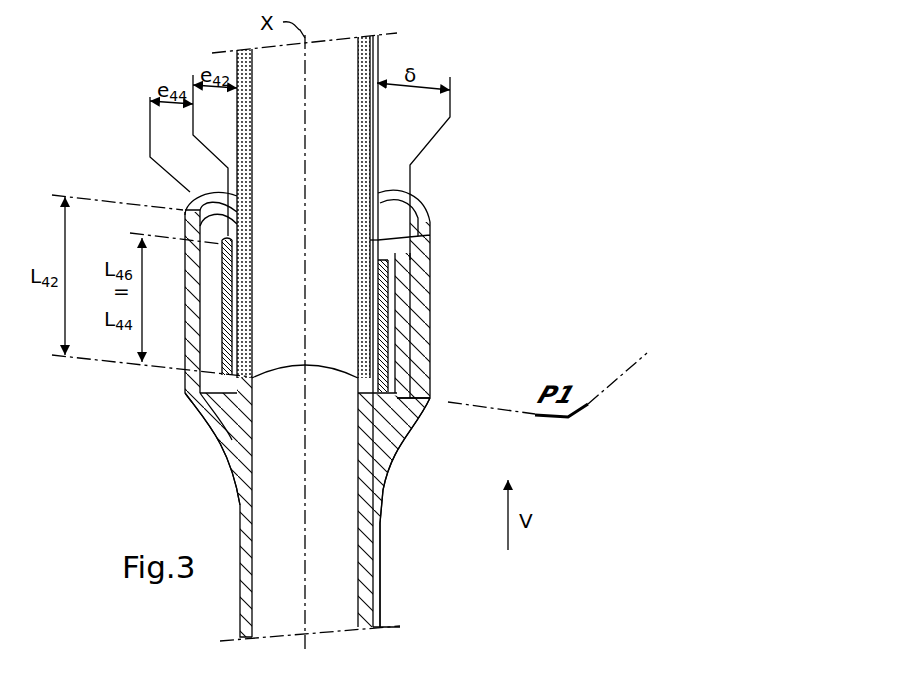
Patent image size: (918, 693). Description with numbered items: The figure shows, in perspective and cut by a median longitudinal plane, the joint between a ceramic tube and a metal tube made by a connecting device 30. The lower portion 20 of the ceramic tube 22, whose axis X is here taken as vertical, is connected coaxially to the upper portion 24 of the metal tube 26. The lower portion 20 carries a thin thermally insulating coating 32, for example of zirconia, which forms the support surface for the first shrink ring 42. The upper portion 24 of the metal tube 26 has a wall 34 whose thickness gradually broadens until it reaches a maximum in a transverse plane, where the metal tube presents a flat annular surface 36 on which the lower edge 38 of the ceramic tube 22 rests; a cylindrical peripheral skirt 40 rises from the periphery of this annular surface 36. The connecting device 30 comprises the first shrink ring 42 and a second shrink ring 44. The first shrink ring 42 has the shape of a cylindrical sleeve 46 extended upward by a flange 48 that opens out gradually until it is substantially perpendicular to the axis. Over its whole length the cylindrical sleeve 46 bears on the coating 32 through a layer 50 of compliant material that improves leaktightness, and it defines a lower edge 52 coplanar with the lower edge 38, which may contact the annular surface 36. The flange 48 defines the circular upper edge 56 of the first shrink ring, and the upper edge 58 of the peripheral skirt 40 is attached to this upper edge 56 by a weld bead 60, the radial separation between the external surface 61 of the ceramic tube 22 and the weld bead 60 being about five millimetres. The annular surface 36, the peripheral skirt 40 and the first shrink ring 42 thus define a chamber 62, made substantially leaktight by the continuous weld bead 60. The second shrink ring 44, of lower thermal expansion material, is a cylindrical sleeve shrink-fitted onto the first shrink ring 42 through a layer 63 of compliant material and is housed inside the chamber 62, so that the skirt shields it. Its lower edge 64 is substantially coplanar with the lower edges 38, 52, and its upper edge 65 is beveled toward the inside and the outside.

The lower portion of the ceramic tube 20 is at (439, 185).
The ceramic tube 22 is at (393, 58).
The upper portion of the metal tube 24 is at (438, 454).
The metal tube 26 is at (382, 585).
The connecting device 30 is at (467, 318).
The thermally insulating coating 32 is at (358, 380).
The wall 34 is at (400, 462).
The flat annular surface 36 is at (432, 394).
The lower edge of the ceramic tube 38 is at (257, 403).
The cylindrical peripheral skirt 40 is at (420, 300).
The first shrink ring 42 is at (222, 390).
The second shrink ring 44 is at (220, 313).
The cylindrical sleeve 46 is at (243, 273).
The flange 48 is at (212, 200).
The layer of compliant material 50 is at (380, 292).
The lower edge of the first shrink ring 52 is at (230, 448).
The upper edge of the first shrink ring 56 is at (407, 257).
The upper edge of the peripheral skirt 58 is at (432, 212).
The weld bead 60 is at (388, 187).
The external surface of the ceramic tube 61 is at (378, 97).
The chamber 62 is at (425, 355).
The layer of compliant material 63 is at (373, 323).
The lower edge of the second shrink ring 64 is at (232, 420).
The upper edge of the second shrink ring 65 is at (373, 243).